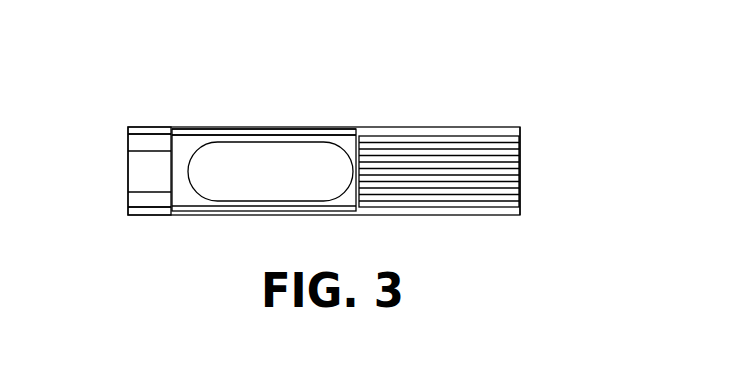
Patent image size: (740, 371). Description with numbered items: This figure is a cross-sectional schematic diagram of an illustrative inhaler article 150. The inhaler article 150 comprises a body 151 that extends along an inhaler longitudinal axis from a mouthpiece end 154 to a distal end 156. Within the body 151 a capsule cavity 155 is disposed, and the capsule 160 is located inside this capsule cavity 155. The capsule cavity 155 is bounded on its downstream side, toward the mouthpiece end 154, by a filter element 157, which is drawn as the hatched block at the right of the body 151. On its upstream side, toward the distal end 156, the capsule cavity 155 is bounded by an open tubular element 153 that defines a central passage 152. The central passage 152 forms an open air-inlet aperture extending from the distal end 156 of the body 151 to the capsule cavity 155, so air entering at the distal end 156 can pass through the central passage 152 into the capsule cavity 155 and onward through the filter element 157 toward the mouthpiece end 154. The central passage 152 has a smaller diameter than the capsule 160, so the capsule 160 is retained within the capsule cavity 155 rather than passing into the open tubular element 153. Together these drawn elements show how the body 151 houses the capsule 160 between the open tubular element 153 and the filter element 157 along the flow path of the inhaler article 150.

The inhaler article 150 is at (373, 117).
The body 151 is at (273, 128).
The central passage 152 is at (135, 182).
The open tubular element 153 is at (138, 200).
The mouthpiece end 154 is at (520, 150).
The capsule cavity 155 is at (186, 152).
The distal end 156 is at (128, 142).
The filter element 157 is at (480, 135).
The capsule 160 is at (250, 182).